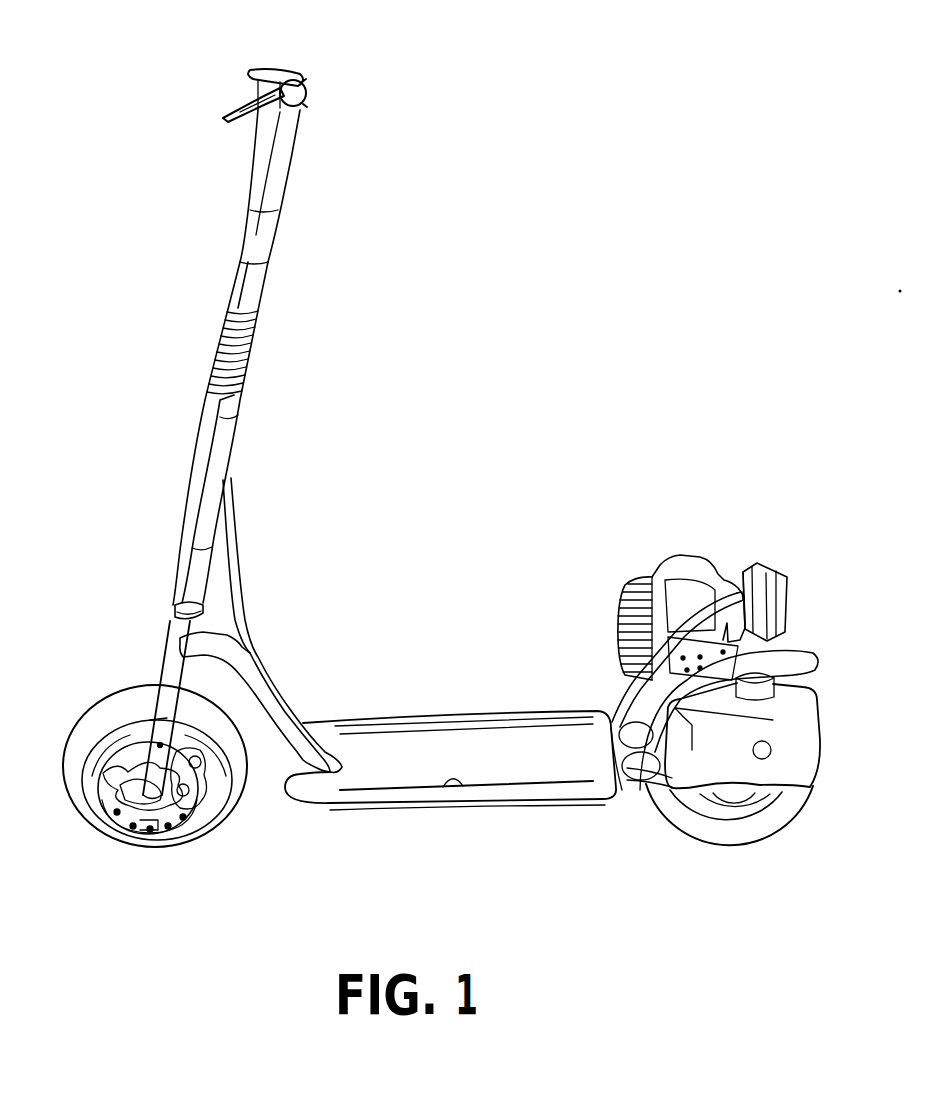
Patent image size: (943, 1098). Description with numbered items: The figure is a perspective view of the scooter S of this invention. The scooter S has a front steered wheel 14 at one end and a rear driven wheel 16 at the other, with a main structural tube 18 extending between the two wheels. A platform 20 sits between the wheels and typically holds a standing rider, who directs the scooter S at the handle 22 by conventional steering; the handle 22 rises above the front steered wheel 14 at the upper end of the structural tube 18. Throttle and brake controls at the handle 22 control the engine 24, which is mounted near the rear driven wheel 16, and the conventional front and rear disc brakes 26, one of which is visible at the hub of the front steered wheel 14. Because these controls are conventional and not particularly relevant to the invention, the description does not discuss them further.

The scooter S is at (392, 497).
The front steered wheel 14 is at (101, 698).
The rear driven wheel 16 is at (705, 842).
The main structural tube 18 is at (283, 692).
The platform 20 is at (458, 783).
The handle 22 is at (309, 90).
The engine 24 is at (638, 573).
The front and rear disc brakes 26 is at (183, 820).